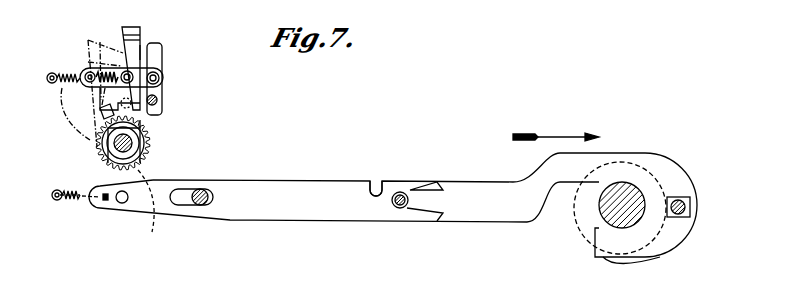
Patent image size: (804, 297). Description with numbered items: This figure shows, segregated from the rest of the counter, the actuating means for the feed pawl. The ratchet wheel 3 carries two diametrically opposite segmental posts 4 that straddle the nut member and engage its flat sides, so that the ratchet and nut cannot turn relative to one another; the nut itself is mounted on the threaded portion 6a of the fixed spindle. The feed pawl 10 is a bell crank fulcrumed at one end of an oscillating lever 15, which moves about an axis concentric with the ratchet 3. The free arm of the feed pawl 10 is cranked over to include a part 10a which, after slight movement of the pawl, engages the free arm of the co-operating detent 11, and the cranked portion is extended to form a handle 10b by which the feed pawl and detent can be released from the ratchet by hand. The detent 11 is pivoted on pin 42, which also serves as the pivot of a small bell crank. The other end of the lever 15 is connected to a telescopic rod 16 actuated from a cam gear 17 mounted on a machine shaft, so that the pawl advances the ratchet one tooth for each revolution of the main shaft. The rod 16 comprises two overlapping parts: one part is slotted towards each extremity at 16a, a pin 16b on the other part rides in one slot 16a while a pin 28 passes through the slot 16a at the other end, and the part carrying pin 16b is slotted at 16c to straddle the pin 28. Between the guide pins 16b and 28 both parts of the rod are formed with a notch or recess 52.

The ratchet wheel 3 is at (147, 192).
The posts 4 is at (97, 143).
The threaded portion 6a is at (141, 129).
The feed pawl 10 is at (98, 36).
The cranked part of feed pawl 10a is at (140, 41).
The handle 10b is at (124, 33).
The detent 11 is at (158, 53).
The oscillating lever 15 is at (92, 100).
The telescopic rod 16 is at (307, 180).
The slot 16a is at (184, 190).
The pin 16b is at (394, 208).
The slot 16c is at (158, 211).
The cam gear 17 is at (594, 223).
The pin 28 is at (207, 207).
The pin 42 is at (156, 98).
The notch 52 is at (378, 180).